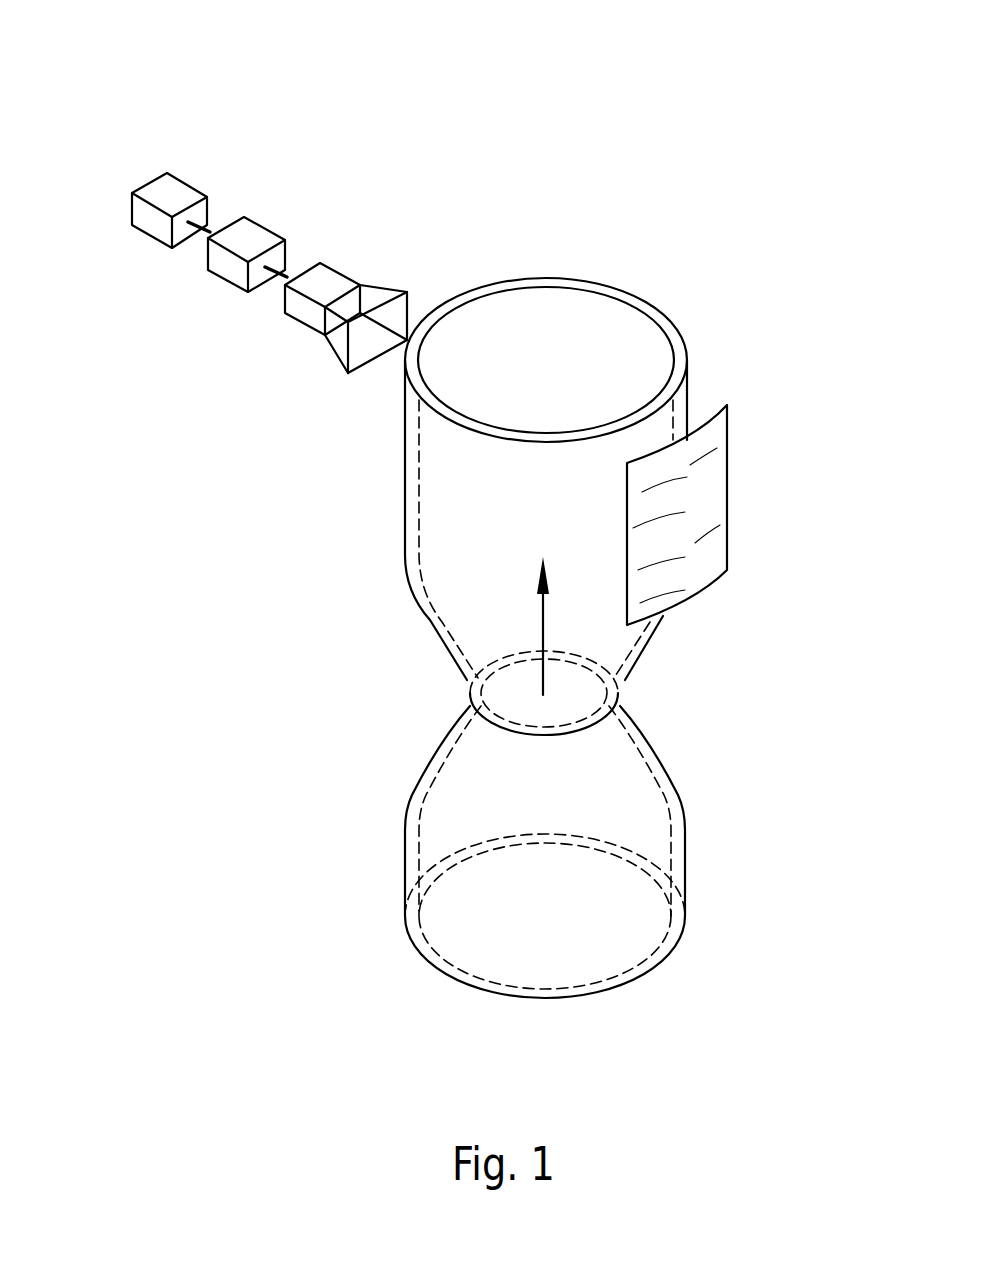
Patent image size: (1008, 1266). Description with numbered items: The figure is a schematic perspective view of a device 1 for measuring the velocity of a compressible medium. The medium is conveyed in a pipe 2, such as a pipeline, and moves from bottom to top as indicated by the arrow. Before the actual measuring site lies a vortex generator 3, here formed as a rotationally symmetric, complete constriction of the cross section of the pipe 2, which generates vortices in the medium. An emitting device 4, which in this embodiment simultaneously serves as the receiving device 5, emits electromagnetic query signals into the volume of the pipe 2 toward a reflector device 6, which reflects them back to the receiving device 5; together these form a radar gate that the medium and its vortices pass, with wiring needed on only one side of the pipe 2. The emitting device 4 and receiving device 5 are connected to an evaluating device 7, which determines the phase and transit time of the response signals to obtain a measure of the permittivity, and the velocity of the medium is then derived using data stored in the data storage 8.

The device 1 is at (498, 258).
The pipe 2 is at (675, 348).
The vortex generator 3 is at (617, 705).
The emitting device 4 is at (310, 370).
The receiving device 5 is at (303, 312).
The reflector device 6 is at (705, 495).
The evaluating device 7 is at (228, 267).
The data storage 8 is at (158, 228).